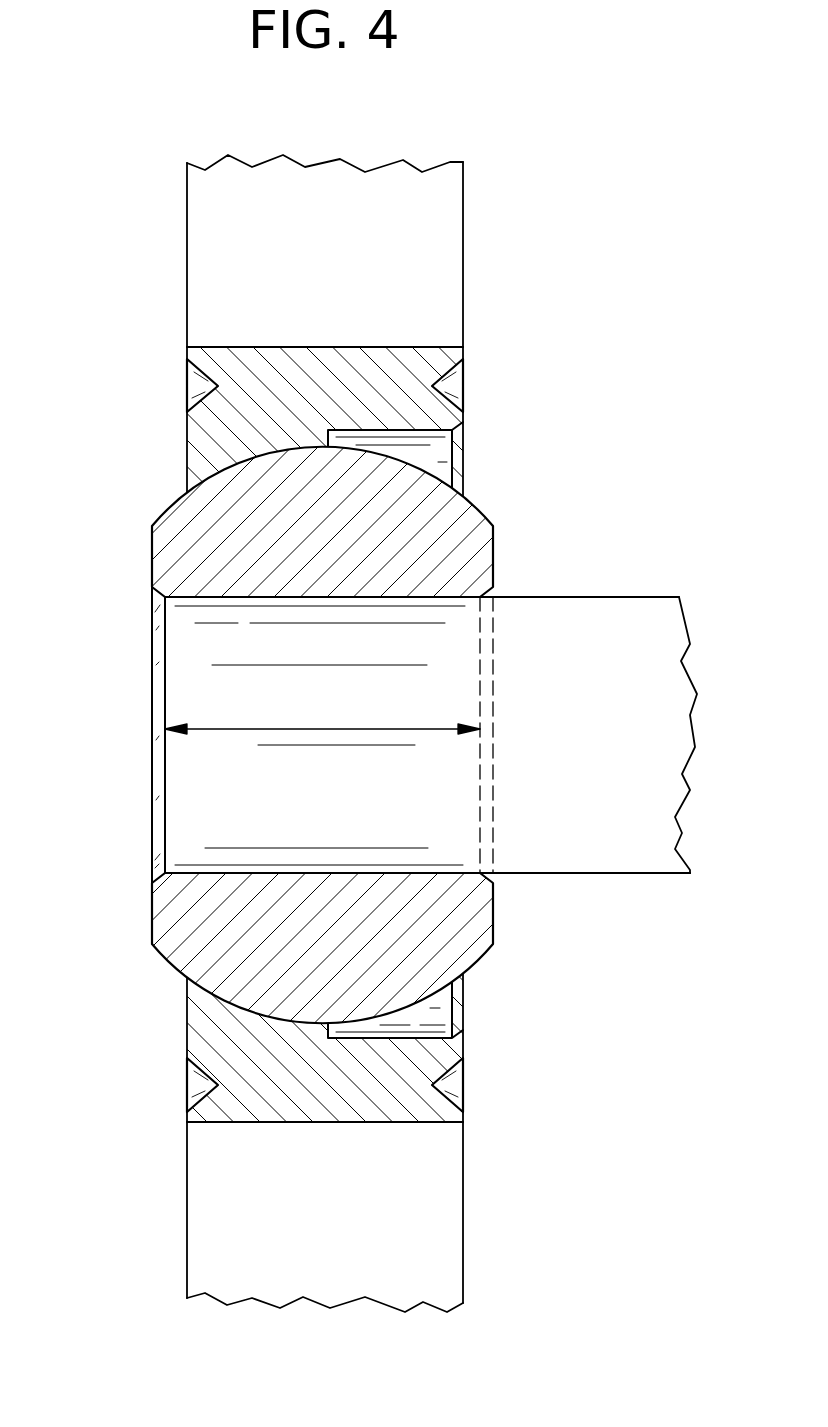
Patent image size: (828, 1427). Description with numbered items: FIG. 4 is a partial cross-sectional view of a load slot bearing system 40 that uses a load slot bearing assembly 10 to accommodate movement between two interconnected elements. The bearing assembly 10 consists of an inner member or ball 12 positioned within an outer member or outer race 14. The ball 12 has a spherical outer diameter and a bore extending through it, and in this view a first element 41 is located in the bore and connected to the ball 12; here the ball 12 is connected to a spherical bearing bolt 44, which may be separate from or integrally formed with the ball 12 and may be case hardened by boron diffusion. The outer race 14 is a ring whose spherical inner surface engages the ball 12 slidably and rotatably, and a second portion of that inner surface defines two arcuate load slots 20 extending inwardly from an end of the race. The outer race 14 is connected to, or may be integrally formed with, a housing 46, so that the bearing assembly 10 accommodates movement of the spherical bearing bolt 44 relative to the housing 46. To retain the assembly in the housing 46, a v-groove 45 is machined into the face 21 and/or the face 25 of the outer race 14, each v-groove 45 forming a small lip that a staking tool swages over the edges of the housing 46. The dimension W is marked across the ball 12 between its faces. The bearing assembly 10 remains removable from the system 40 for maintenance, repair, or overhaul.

The load slot bearing assembly 10 is at (338, 735).
The ball 12 is at (140, 911).
The outer race 14 is at (445, 418).
The load slot 20 is at (435, 457).
The face 21 is at (445, 1057).
The face 25 is at (187, 1038).
The load slot bearing system 40 is at (335, 688).
The first element 41 is at (458, 767).
The spherical bearing bolt 44 is at (604, 873).
The v-groove 45 is at (190, 393).
The housing 46 is at (210, 313).
The width of inner ring W is at (229, 730).